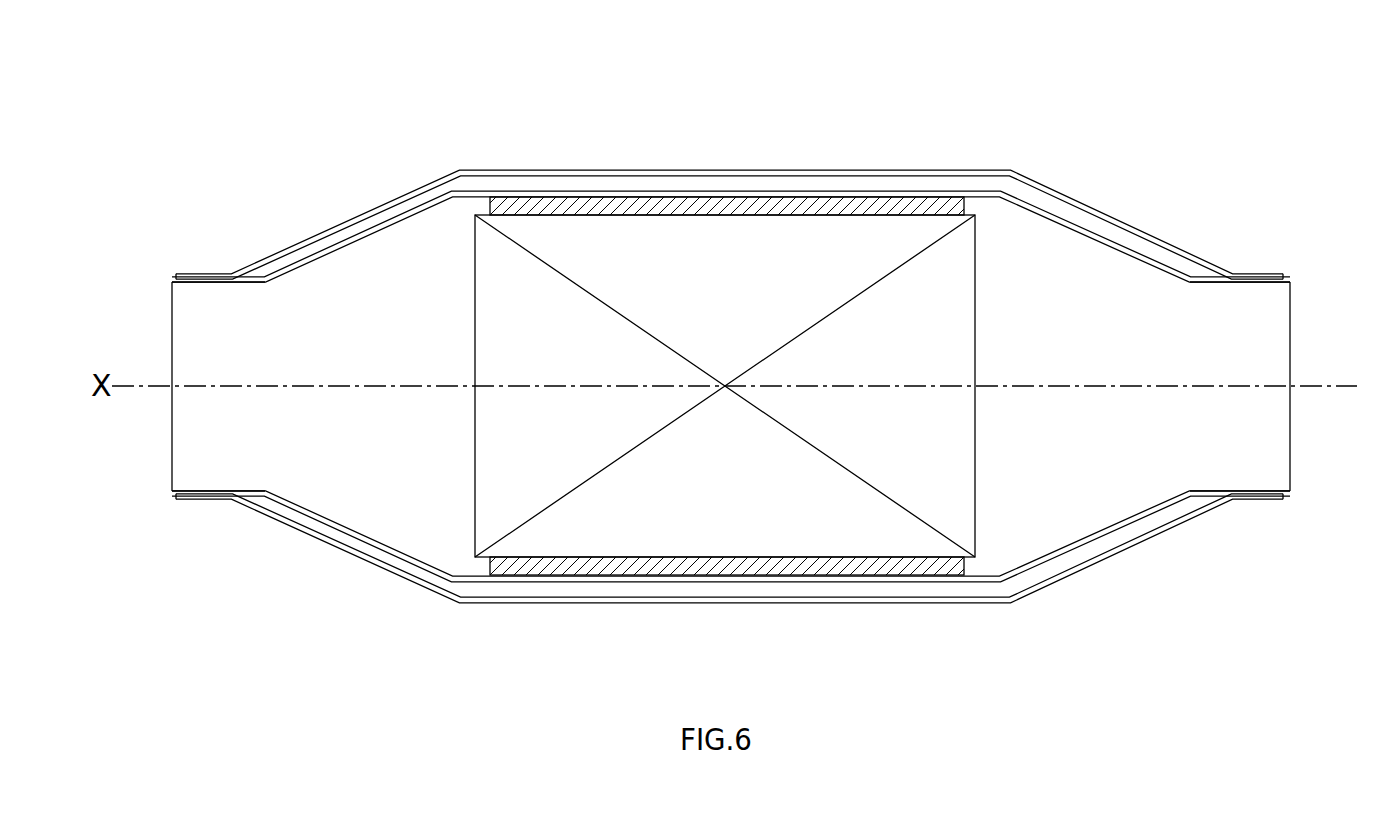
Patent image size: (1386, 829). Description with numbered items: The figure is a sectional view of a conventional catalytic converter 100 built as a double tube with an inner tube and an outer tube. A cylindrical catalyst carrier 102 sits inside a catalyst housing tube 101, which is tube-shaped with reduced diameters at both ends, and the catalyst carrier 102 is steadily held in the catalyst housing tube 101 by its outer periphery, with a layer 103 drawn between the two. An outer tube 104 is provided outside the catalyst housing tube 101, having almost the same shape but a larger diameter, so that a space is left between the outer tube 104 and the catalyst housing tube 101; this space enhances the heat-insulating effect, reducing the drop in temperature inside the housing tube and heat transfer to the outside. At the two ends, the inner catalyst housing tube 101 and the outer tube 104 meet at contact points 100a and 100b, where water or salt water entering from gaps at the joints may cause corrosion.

The catalytic converter 100 is at (1118, 130).
The contact point 100a is at (202, 275).
The contact point 100b is at (1268, 277).
The catalyst housing tube 101 is at (1137, 258).
The catalyst carrier 102 is at (962, 272).
The holding mat 103 is at (848, 205).
The outer tube 104 is at (773, 170).